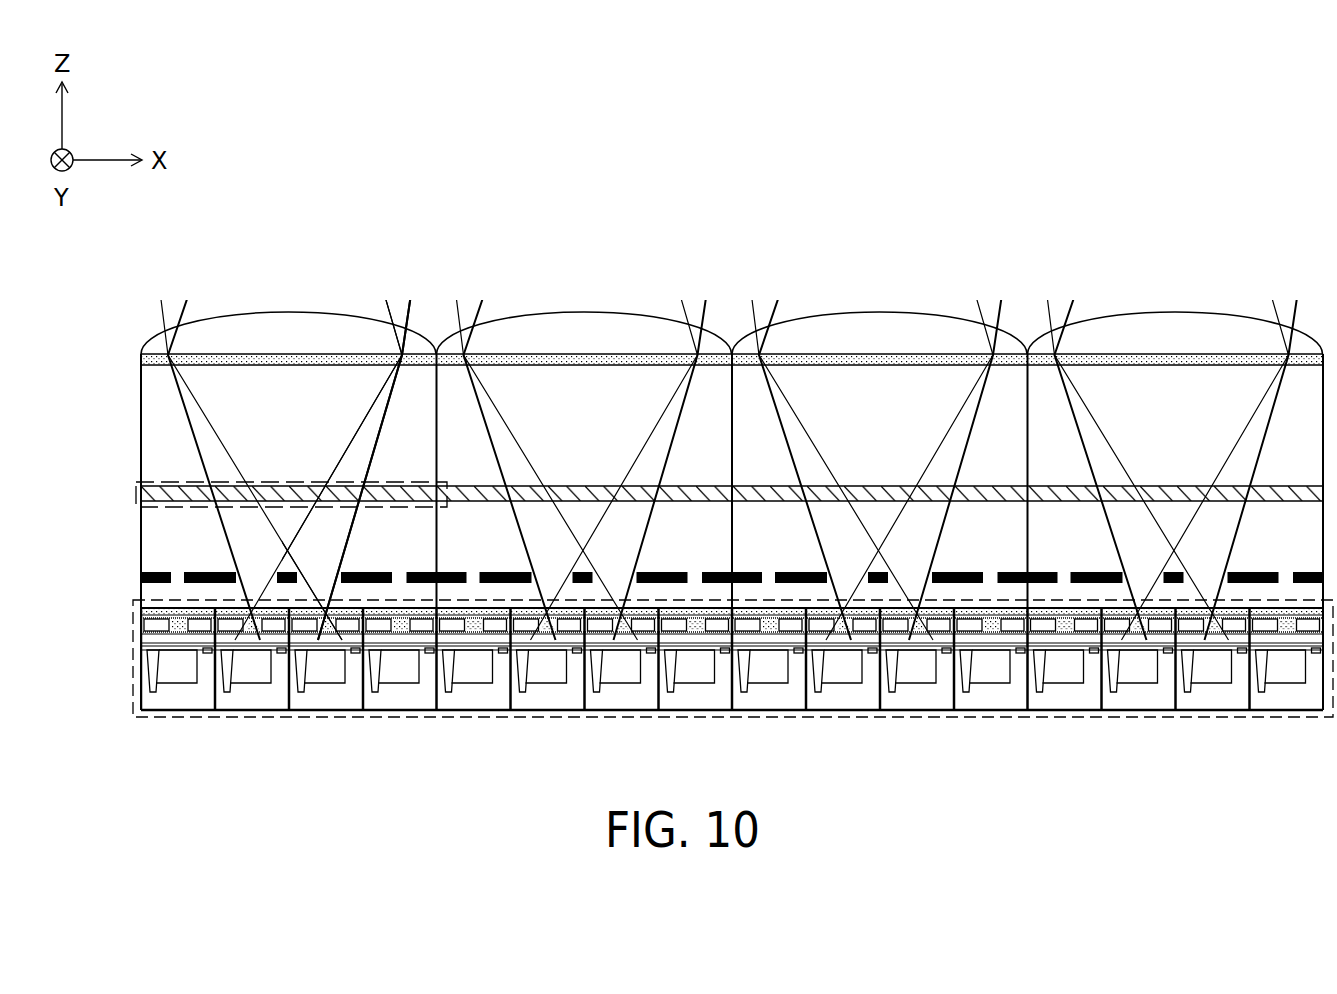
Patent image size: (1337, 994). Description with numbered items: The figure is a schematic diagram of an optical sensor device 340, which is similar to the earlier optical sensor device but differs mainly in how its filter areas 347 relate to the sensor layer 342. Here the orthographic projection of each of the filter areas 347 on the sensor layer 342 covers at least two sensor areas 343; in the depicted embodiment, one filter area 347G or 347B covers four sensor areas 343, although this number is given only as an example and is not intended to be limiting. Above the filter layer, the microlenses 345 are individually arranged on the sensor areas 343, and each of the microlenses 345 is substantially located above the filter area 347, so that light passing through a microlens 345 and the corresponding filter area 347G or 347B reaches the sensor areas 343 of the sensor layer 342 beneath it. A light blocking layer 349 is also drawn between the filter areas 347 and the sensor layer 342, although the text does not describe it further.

The optical sensor device 340 is at (1291, 796).
The sensor layer 342 is at (133, 672).
The sensor areas 343 is at (178, 712).
The microlenses 345 is at (157, 336).
The filter areas 347 is at (135, 500).
The filter area 347B is at (585, 487).
The filter area 347G is at (162, 484).
The light blocking layer 349 is at (142, 577).